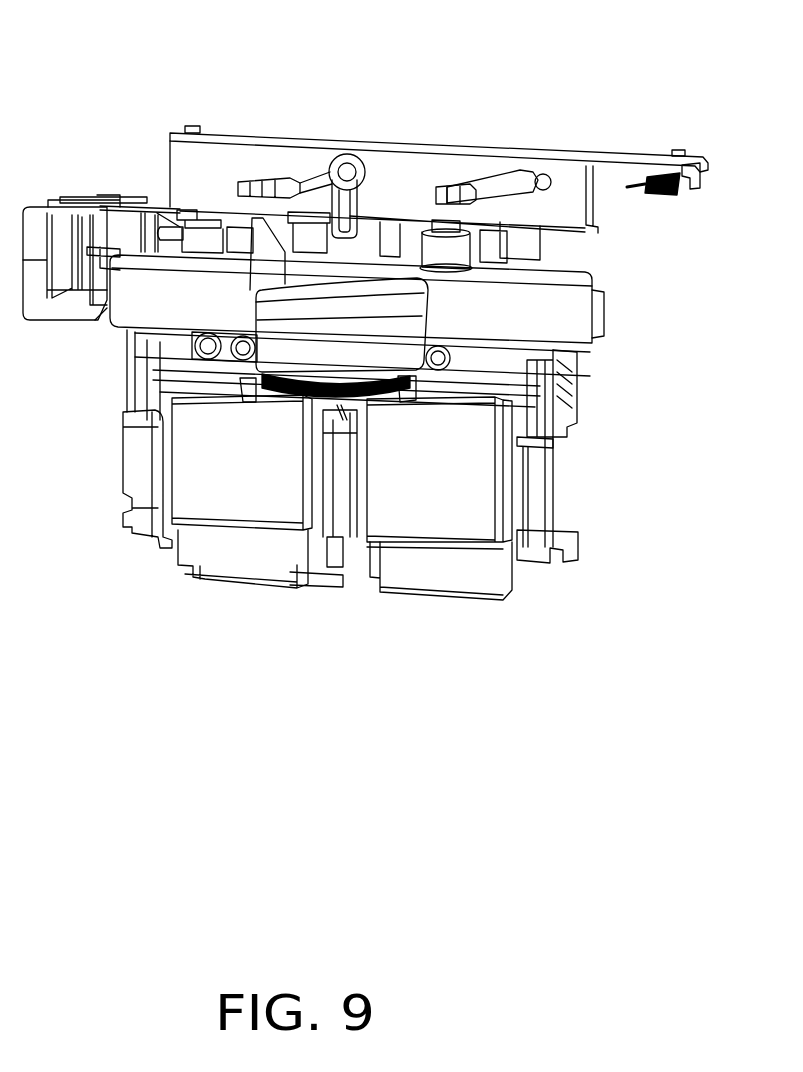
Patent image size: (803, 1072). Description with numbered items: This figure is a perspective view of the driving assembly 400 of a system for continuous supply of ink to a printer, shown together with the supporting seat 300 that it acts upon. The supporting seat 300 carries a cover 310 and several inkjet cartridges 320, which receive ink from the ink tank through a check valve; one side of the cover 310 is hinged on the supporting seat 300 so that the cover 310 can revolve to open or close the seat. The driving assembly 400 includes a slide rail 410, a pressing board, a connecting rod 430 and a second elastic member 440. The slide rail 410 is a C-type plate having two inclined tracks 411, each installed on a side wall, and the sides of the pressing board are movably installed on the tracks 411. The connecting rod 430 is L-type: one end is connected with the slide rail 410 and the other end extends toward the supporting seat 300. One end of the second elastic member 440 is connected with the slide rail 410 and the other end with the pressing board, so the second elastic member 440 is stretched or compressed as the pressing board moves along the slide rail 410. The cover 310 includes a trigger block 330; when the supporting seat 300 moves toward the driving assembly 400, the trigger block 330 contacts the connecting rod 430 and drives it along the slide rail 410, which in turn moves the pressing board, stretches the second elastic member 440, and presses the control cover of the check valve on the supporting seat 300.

The supporting seat 300 is at (547, 407).
The cover 310 is at (540, 308).
The inkjet cartridge 320 is at (467, 445).
The trigger block 330 is at (268, 256).
The driving assembly 400 is at (276, 104).
The slide rail 410 is at (360, 143).
The inclined track 411 is at (512, 180).
The connecting rod 430 is at (345, 200).
The second elastic member 440 is at (662, 196).